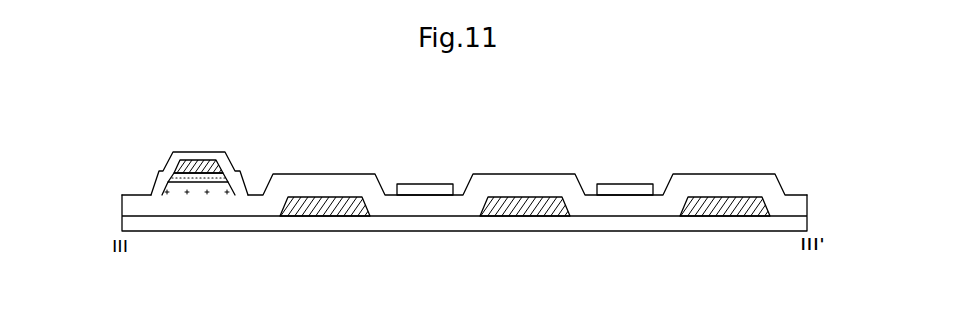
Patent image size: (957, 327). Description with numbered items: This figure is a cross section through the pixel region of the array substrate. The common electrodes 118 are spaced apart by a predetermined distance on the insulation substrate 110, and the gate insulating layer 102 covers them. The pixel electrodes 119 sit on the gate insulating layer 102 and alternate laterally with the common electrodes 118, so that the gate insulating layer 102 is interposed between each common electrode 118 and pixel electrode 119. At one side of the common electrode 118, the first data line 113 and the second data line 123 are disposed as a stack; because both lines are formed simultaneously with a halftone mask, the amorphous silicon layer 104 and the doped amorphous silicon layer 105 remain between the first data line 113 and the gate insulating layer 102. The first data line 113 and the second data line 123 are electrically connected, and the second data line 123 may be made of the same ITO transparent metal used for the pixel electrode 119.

The gate insulating layer 102 is at (618, 210).
The amorphous silicon layer 104 is at (218, 185).
The doped amorphous silicon layer 105 is at (183, 185).
The insulation substrate 110 is at (780, 224).
The first data line 113 is at (213, 167).
The common electrode 118 is at (325, 210).
The pixel electrode 119 is at (423, 187).
The second data line 123 is at (177, 160).